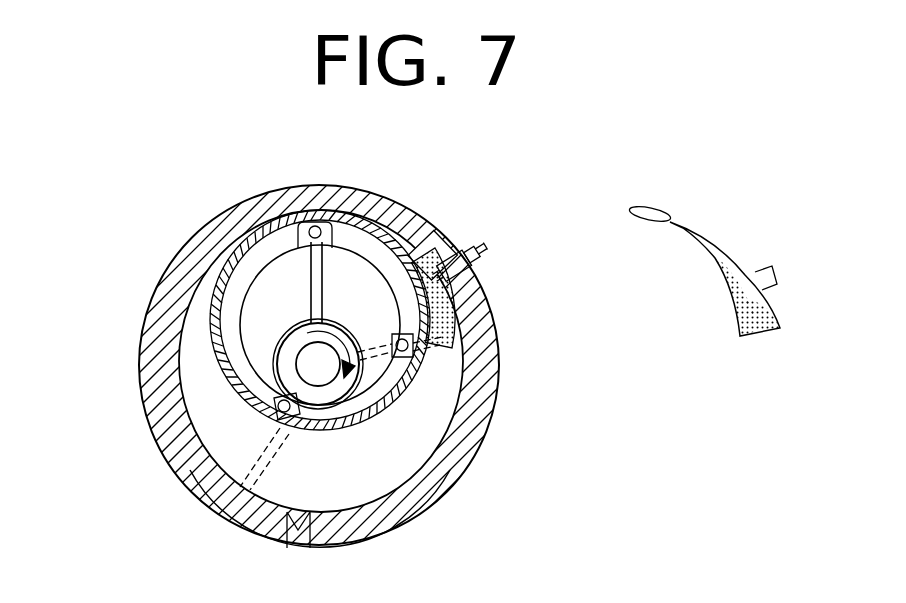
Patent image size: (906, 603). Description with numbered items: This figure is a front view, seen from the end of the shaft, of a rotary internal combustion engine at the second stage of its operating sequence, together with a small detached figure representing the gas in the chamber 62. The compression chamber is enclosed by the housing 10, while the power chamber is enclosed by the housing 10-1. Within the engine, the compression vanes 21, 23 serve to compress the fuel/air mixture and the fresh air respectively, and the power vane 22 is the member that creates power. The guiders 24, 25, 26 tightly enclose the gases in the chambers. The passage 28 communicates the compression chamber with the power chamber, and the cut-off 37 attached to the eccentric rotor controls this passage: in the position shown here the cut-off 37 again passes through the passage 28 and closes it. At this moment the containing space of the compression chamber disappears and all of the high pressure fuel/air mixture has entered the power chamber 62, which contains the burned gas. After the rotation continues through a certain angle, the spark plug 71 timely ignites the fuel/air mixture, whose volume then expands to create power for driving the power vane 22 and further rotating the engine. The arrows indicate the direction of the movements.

The housing of the compression chamber 10 is at (187, 462).
The housing of the power chamber 10-1 is at (453, 467).
The compression vane 21 is at (312, 268).
The power vane 22 is at (460, 337).
The compression vane 23 is at (247, 477).
The guider 24 is at (330, 222).
The guider 25 is at (408, 388).
The guider 26 is at (312, 437).
The passage 28 is at (313, 213).
The cut-off 37 is at (287, 425).
The chamber 62 is at (452, 313).
The spark plug 71 is at (490, 259).